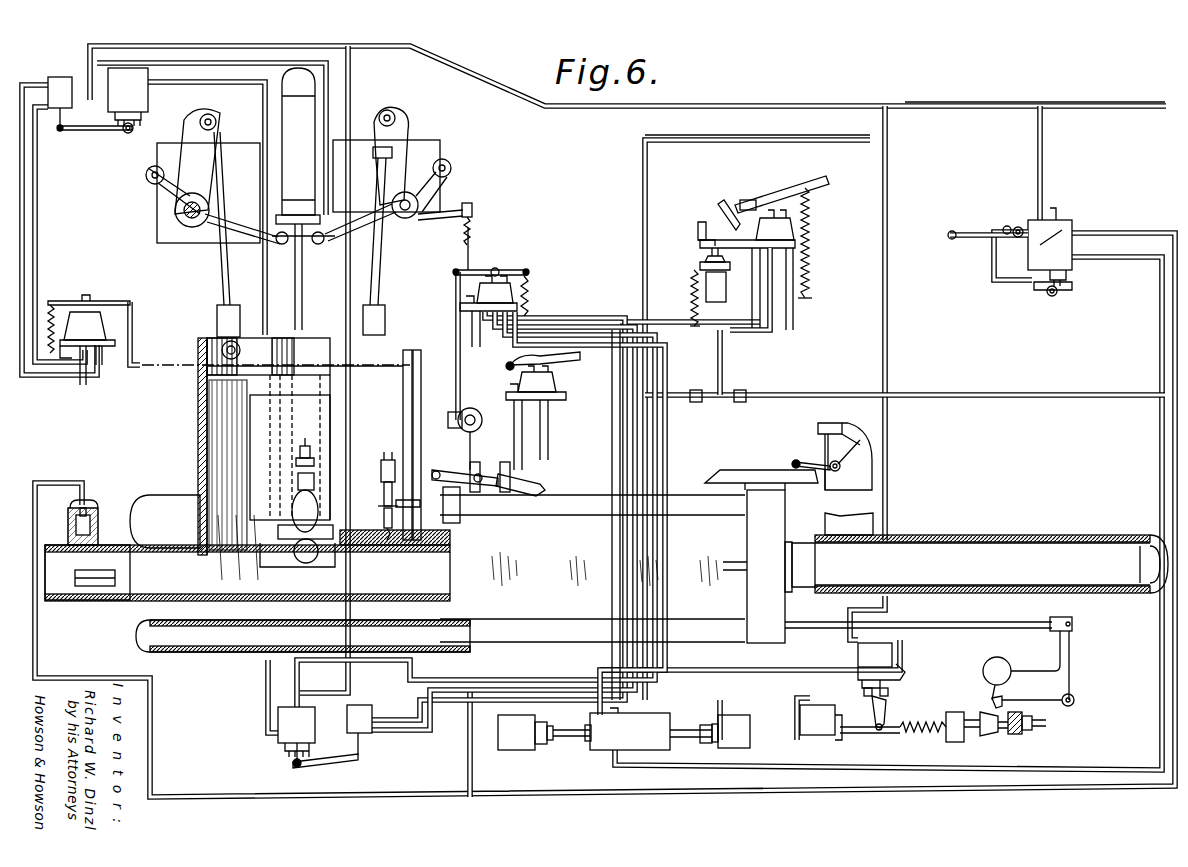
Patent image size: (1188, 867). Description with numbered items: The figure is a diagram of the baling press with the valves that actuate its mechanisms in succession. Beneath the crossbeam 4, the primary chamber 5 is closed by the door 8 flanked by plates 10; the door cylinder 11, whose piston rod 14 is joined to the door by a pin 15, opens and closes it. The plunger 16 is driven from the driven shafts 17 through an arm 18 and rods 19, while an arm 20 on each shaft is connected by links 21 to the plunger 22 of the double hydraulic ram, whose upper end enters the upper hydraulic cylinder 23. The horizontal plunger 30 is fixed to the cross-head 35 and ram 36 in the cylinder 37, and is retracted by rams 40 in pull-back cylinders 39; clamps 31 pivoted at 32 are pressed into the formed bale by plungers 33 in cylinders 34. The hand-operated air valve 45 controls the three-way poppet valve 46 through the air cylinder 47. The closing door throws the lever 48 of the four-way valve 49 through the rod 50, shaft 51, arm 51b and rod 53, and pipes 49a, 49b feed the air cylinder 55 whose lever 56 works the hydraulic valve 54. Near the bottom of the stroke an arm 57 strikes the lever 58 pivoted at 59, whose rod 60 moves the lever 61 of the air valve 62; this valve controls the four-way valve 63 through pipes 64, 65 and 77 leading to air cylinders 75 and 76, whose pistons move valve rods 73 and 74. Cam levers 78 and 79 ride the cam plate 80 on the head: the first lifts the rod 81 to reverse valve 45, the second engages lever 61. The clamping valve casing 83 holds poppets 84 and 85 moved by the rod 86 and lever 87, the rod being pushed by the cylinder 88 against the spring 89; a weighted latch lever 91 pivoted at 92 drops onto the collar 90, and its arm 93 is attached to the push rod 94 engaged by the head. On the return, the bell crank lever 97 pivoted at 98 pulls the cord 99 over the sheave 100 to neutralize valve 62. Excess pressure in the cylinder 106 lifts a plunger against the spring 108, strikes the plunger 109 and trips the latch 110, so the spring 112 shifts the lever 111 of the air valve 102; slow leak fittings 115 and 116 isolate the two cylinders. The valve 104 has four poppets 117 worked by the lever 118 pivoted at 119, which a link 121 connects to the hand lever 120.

The crossbeam 4 is at (318, 764).
The primary chamber 5 is at (246, 406).
The door 8 is at (260, 460).
The plates 10 is at (400, 403).
The cylinder 11 is at (297, 528).
The piston rod 14 is at (314, 478).
The pin 15 is at (312, 460).
The plunger 16 is at (243, 351).
The driven shafts 17 is at (186, 226).
The arm 18 is at (210, 150).
The rods 19 is at (224, 180).
The arm 20 is at (152, 184).
The links 21 is at (250, 232).
The plunger 22 is at (303, 270).
The upper hydraulic cylinder 23 is at (298, 146).
The plunger 30 is at (381, 558).
The clamps 31 is at (114, 576).
The pivot 32 is at (392, 526).
The plungers 33 is at (90, 526).
The cylinders 34 is at (86, 504).
The cross-head 35 is at (781, 566).
The ram 36 is at (991, 553).
The cylinder 37 is at (988, 535).
The pull-back cylinders 39 is at (300, 573).
The rams 40 is at (584, 620).
The main hand-operated air valve 45 is at (552, 386).
The three-way hydraulic poppet valve 46 is at (608, 532).
The air cylinder 47 is at (318, 724).
The lever 48 is at (108, 302).
The four-way valve 49 is at (108, 318).
The pipe 49a is at (32, 376).
The pipe 49b is at (36, 230).
The rod 50 is at (384, 490).
The shaft 51 is at (388, 506).
The arm 51b is at (420, 508).
The rod 53 is at (424, 408).
The four-way hydraulic valve 54 is at (128, 97).
The air cylinder 55 is at (60, 83).
The lever 56 is at (108, 131).
The arm 57 is at (403, 192).
The lever 58 is at (452, 222).
The pivot 59 is at (417, 260).
The rod 60 is at (472, 266).
The lever 61 is at (496, 266).
The air valve 62 is at (514, 291).
The four-way hydraulic valve 63 is at (636, 750).
The pipe 64 is at (622, 460).
The pipe 65 is at (514, 521).
The valve rod 73 is at (574, 730).
The valve rod 74 is at (690, 730).
The air cylinder 75 is at (525, 732).
The air cylinder 76 is at (662, 682).
The pipe 77 is at (716, 710).
The cam lever 78 is at (510, 492).
The cam lever 79 is at (470, 490).
The cam plate 80 is at (745, 475).
The rod 81 is at (482, 412).
The clamping cylinder valve casing 83 is at (894, 660).
The poppet 84 is at (862, 688).
The poppet 85 is at (890, 688).
The rod 86 is at (980, 706).
The lever 87 is at (872, 704).
The cylinder 88 is at (821, 728).
The spring 89 is at (922, 718).
The collar 90 is at (1005, 727).
The weighted latch lever 91 is at (1044, 677).
The pivot 92 is at (1074, 702).
The arm 93 is at (1070, 664).
The push rod 94 is at (975, 628).
The bell crank lever 97 is at (829, 457).
The pivot 98 is at (832, 490).
The cord 99 is at (795, 430).
The sheave 100 is at (475, 435).
The air valve 102 is at (810, 228).
The valve 104 is at (1068, 200).
The cylinder 106 is at (747, 270).
The spring 108 is at (690, 304).
The plunger 109 is at (708, 255).
The latch 110 is at (716, 212).
The lever 111 is at (798, 194).
The spring 112 is at (806, 296).
The slow leak fitting 115 is at (691, 402).
The slow leak fitting 116 is at (740, 402).
The poppets 117 is at (1040, 290).
The lever 118 is at (1000, 288).
The pivot 119 is at (1054, 296).
The hand lever 120 is at (968, 234).
The link 121 is at (996, 252).